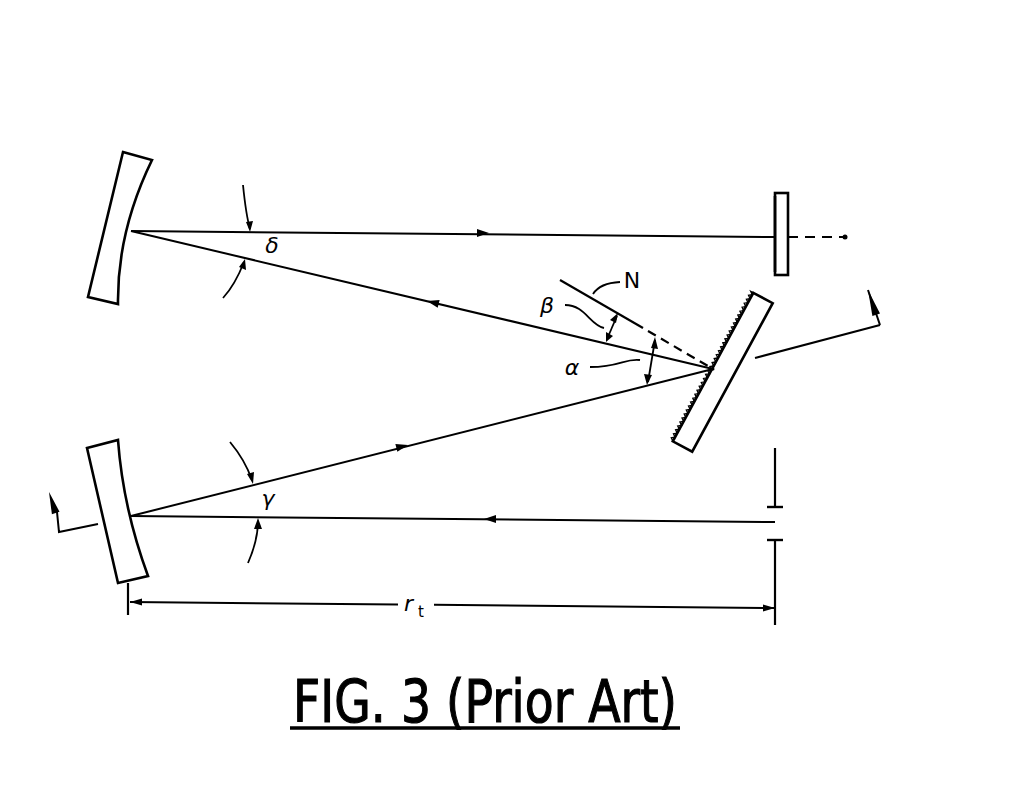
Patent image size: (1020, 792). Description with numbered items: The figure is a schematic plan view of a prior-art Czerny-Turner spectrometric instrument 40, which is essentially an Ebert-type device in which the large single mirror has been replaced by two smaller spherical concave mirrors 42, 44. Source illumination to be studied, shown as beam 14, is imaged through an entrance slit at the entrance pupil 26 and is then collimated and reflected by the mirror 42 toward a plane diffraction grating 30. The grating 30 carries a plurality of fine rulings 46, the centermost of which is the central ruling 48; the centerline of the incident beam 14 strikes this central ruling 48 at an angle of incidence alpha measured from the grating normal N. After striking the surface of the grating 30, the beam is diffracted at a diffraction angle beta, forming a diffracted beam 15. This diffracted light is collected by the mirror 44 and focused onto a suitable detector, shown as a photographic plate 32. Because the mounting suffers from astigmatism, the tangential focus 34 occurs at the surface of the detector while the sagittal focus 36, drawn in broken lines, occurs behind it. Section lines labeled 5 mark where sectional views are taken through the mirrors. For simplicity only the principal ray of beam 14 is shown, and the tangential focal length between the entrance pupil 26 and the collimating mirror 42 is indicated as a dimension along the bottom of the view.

The section line 5- 5 is at (456, 396).
The incident beam 14 is at (358, 458).
The diffracted beam 15 is at (382, 288).
The entrance pupil 26 is at (776, 552).
The plane diffraction grating 30 is at (721, 361).
The photographic plate 32 is at (800, 214).
The tangential focus 34 is at (775, 237).
The sagittal focus 36 is at (845, 237).
The Czerny-Turner spectrometric instrument 40 is at (181, 138).
The collimating mirror 42 is at (107, 547).
The focusing mirror 44 is at (107, 212).
The rulings 46 is at (692, 405).
The central ruling 48 is at (712, 368).